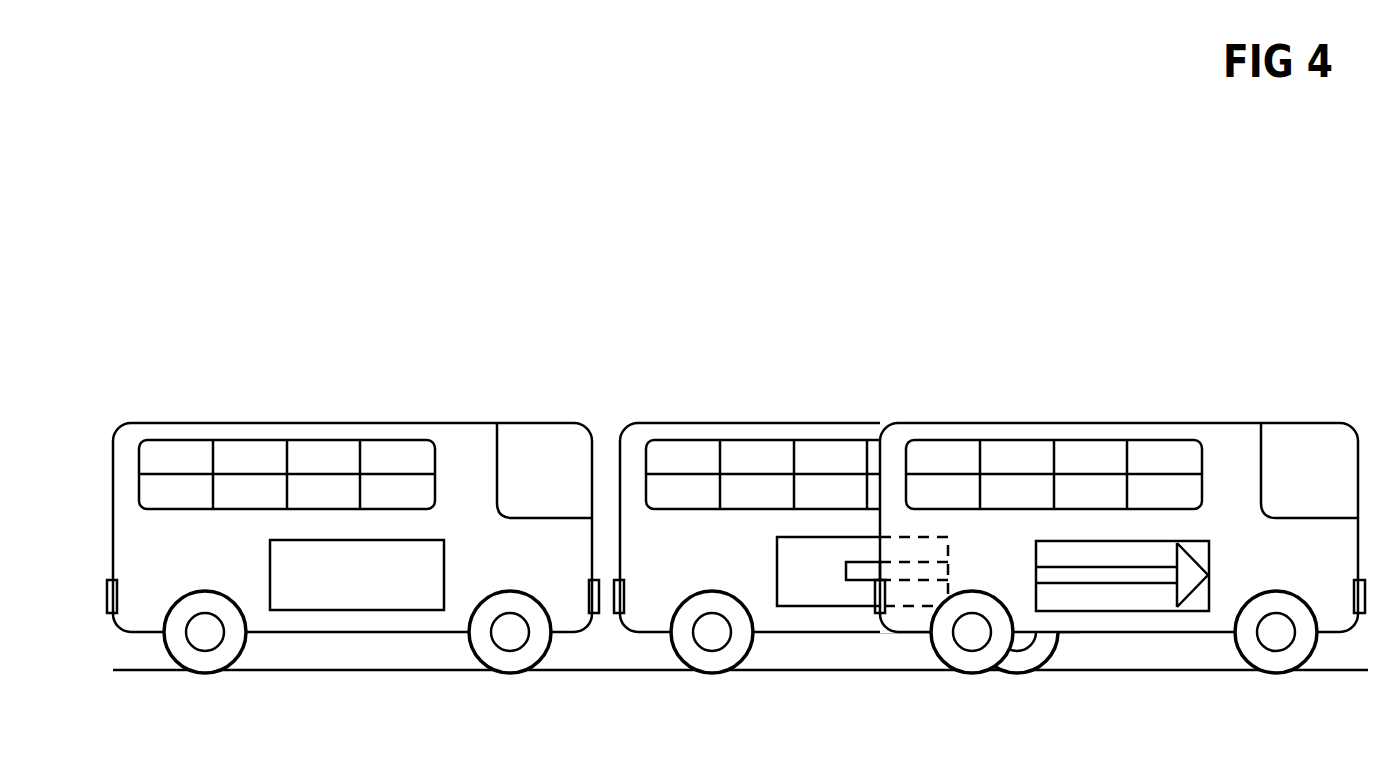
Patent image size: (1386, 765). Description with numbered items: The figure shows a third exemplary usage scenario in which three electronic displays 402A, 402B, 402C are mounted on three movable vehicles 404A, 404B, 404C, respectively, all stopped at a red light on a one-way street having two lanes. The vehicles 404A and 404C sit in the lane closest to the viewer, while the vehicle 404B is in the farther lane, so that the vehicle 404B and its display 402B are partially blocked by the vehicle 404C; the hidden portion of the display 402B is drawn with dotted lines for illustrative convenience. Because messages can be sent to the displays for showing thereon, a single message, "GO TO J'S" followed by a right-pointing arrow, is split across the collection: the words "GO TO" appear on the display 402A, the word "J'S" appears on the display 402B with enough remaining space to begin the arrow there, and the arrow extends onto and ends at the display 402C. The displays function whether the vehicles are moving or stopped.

The vehicle 404A is at (353, 520).
The vehicle 404B is at (860, 520).
The vehicle 404C is at (1120, 520).
The display 402A is at (333, 610).
The display 402B is at (787, 606).
The display 402C is at (1075, 611).